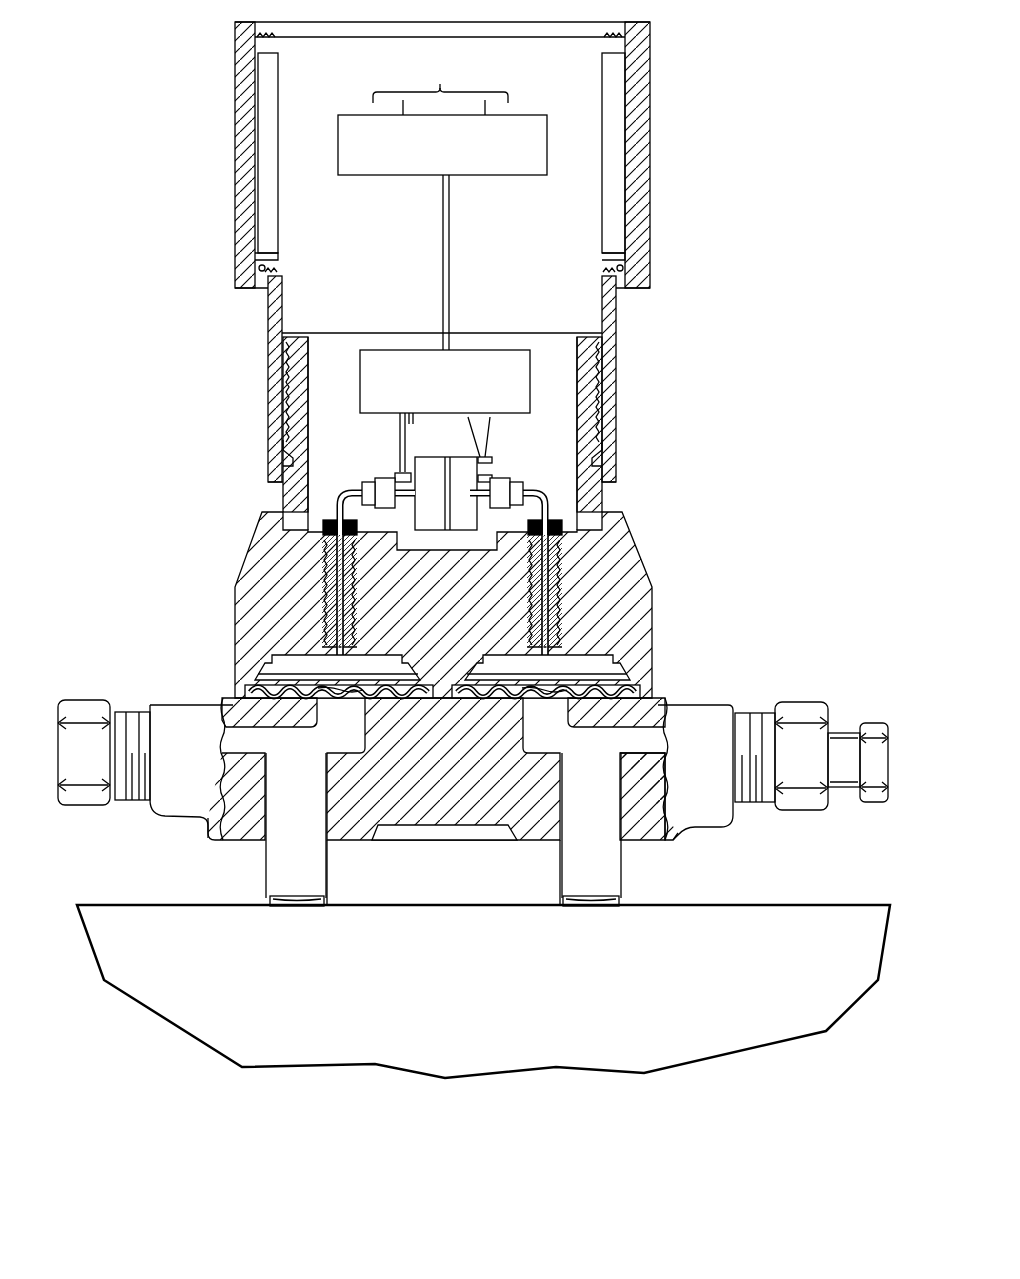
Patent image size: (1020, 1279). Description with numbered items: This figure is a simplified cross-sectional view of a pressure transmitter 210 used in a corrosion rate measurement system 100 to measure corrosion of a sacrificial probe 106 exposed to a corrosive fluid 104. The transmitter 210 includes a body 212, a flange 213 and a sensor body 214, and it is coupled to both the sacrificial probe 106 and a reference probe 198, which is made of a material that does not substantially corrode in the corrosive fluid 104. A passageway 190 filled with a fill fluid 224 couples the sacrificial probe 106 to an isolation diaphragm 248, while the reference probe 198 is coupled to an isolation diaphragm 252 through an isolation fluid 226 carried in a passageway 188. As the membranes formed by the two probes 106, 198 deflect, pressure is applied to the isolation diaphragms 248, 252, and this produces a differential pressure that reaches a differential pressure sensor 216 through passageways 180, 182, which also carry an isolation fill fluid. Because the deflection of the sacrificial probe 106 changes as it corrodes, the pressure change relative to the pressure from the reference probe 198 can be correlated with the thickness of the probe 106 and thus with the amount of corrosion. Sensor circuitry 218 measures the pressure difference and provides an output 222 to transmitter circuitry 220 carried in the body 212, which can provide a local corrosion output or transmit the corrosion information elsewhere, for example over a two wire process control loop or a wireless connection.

The corrosion rate measurement system 100 is at (178, 192).
The corrosive fluid 104 is at (483, 1000).
The sacrificial probe 106 is at (300, 923).
The passageway 180 is at (295, 668).
The passageway 182 is at (618, 655).
The passageway 188 is at (597, 882).
The passageway 190 is at (287, 880).
The reference probe 198 is at (598, 925).
The pressure transmitter 210 is at (728, 210).
The body 212 is at (650, 112).
The flange 213 is at (190, 793).
The sensor body 214 is at (637, 552).
The differential pressure sensor 216 is at (428, 480).
The sensor circuitry 218 is at (531, 375).
The transmitter circuitry 220 is at (547, 137).
The output 222 is at (450, 248).
The fill fluid 224 is at (315, 771).
The isolation fluid 226 is at (613, 777).
The isolation diaphragm 248 is at (341, 686).
The isolation diaphragm 252 is at (543, 688).